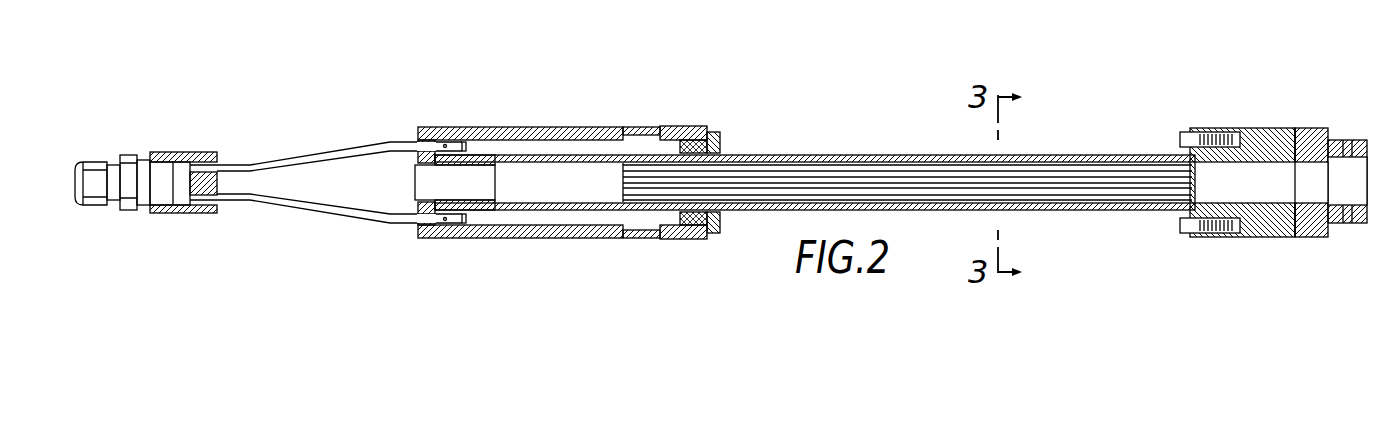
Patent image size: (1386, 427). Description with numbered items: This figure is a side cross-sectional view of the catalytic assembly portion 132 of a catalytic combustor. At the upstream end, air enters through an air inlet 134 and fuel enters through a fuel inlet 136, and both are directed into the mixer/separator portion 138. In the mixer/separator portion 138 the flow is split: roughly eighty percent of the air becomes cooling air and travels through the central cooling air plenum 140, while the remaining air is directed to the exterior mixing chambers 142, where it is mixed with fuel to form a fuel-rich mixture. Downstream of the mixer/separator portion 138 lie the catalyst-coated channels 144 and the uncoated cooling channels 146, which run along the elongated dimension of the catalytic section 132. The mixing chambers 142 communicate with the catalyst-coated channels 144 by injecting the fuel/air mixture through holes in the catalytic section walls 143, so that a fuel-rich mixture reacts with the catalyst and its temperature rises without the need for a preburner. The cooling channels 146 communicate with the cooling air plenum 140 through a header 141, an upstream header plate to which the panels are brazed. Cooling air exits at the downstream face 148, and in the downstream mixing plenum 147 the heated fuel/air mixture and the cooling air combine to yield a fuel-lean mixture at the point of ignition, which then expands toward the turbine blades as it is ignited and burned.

The catalytic assembly portion 132 is at (677, 86).
The air inlet 134 is at (295, 177).
The fuel inlet 136 is at (343, 152).
The mixer/separator portion 138 is at (531, 255).
The central cooling air plenum 140 is at (567, 192).
The header 141 is at (635, 208).
The exterior mixing chambers 142 is at (505, 143).
The catalytic section walls 143 is at (653, 150).
The catalyst-coated channels 144 is at (745, 170).
The cooling channels 146 is at (808, 165).
The downstream mixing plenum 147 is at (1275, 172).
The downstream face 148 is at (1195, 180).